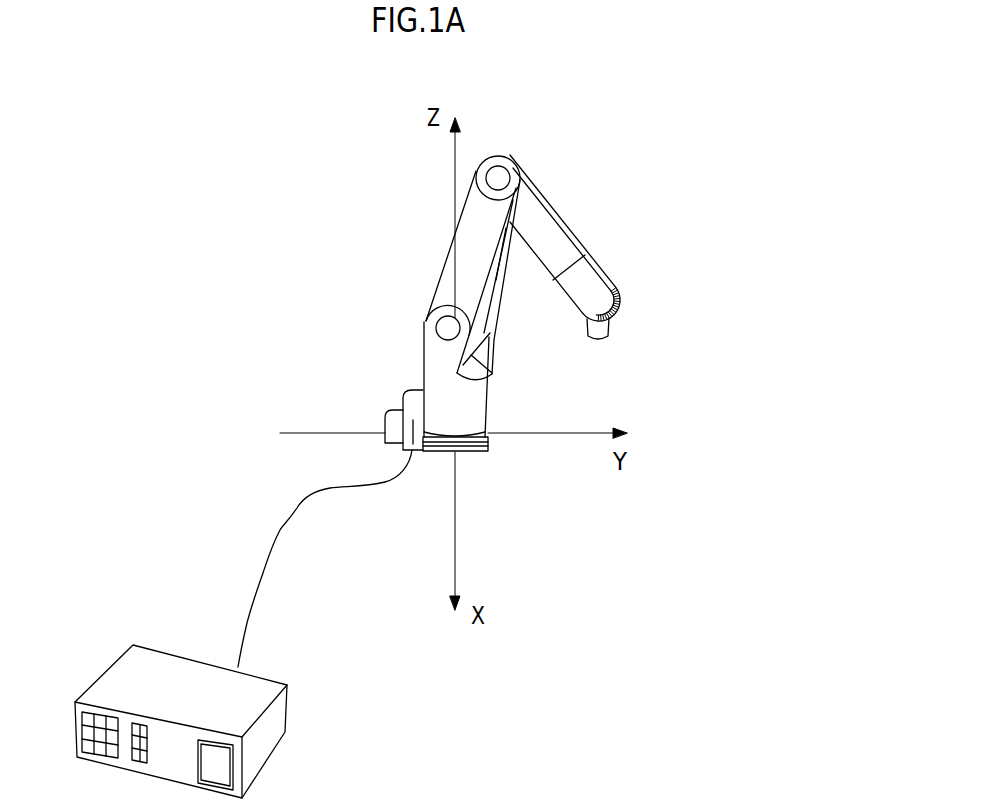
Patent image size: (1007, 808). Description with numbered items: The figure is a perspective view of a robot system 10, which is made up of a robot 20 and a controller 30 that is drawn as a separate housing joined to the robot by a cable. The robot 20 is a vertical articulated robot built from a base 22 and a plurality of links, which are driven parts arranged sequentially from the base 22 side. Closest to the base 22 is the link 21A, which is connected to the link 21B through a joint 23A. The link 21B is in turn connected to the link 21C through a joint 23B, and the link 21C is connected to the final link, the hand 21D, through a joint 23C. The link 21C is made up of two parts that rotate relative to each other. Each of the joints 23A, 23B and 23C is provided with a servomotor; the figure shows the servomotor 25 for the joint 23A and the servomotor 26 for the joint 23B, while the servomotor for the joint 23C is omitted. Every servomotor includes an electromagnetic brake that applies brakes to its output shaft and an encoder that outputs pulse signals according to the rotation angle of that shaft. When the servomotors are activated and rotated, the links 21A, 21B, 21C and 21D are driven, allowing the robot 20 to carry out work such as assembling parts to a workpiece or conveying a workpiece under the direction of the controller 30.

The robot system 10 is at (727, 118).
The robot 20 is at (573, 183).
The link 21A is at (489, 408).
The link 21B is at (443, 265).
The link 21C is at (582, 228).
The link (hand) 21D is at (610, 332).
The base 22 is at (487, 437).
The joint 23A is at (493, 340).
The joint 23B is at (470, 200).
The joint 23C is at (603, 305).
The servomotor 25 is at (425, 335).
The servomotor 26 is at (500, 156).
The controller 30 is at (268, 677).